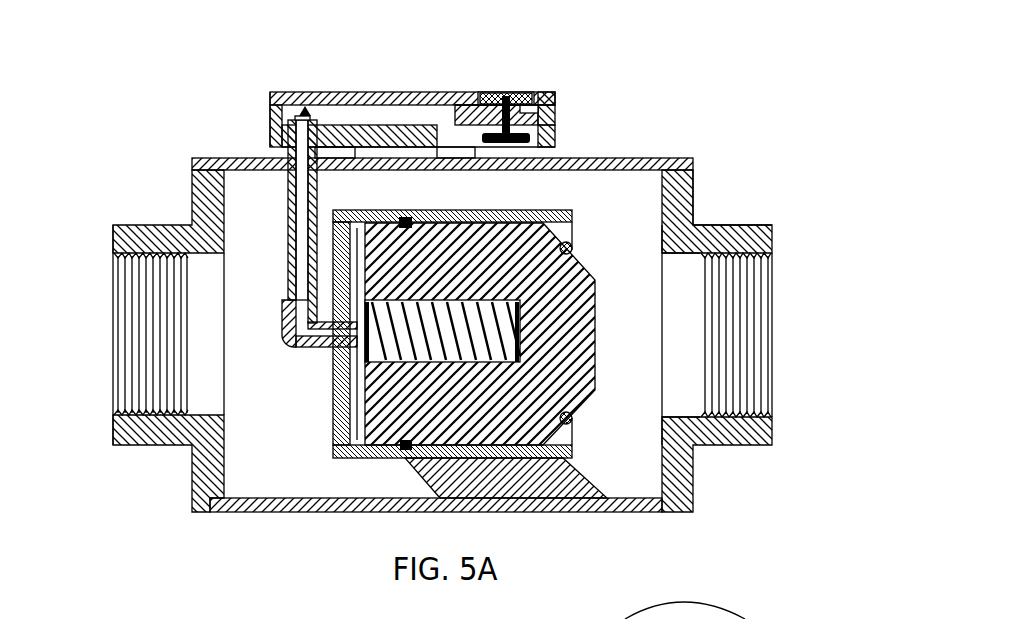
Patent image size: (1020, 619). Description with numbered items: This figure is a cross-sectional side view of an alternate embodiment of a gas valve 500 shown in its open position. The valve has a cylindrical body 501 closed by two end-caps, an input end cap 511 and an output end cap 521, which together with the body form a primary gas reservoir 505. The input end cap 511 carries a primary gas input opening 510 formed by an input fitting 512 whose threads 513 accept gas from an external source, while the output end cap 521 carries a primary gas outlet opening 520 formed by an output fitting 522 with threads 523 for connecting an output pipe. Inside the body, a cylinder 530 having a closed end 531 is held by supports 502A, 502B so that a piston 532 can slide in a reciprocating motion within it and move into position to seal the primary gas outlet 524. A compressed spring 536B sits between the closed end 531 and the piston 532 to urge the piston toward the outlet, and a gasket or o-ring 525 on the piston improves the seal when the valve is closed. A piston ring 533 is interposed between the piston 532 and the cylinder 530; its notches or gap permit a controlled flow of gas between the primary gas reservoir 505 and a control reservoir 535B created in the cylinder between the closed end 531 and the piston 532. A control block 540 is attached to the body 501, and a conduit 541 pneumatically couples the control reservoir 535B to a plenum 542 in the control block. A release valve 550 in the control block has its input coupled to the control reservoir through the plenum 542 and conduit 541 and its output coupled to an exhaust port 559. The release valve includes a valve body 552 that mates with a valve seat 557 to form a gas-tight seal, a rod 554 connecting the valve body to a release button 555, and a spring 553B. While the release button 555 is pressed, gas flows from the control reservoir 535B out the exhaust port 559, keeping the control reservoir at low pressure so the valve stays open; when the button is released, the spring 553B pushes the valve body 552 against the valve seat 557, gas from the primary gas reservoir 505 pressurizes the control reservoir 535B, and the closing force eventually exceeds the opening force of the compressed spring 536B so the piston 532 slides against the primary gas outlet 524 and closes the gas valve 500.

The gas valve 500 is at (762, 117).
The cylindrical body 501 is at (233, 158).
The support 502A is at (571, 424).
The support 502B is at (572, 250).
The primary gas reservoir 505 is at (282, 417).
The primary gas input opening 510 is at (102, 392).
The input end cap 511 is at (192, 160).
The input fitting 512 is at (152, 448).
The threads 513 is at (125, 305).
The primary gas outlet opening 520 is at (777, 379).
The output end cap 521 is at (687, 157).
The output fitting 522 is at (742, 228).
The threads 523 is at (767, 297).
The primary gas outlet 524 is at (682, 333).
The gasket or o-ring 525 is at (577, 255).
The cylinder 530 is at (528, 212).
The closed end 531 is at (355, 372).
The piston 532 is at (596, 350).
The piston ring 533 is at (405, 217).
The control reservoir 535B is at (360, 428).
The compressed spring 536B is at (357, 378).
The control block 540 is at (322, 92).
The conduit 541 is at (297, 209).
The plenum 542 is at (272, 93).
The release valve 550 is at (546, 78).
The valve body 552 is at (556, 128).
The spring 553B is at (553, 138).
The rod 554 is at (507, 92).
The release button 555 is at (527, 92).
The valve seat 557 is at (480, 117).
The exhaust port 559 is at (562, 113).